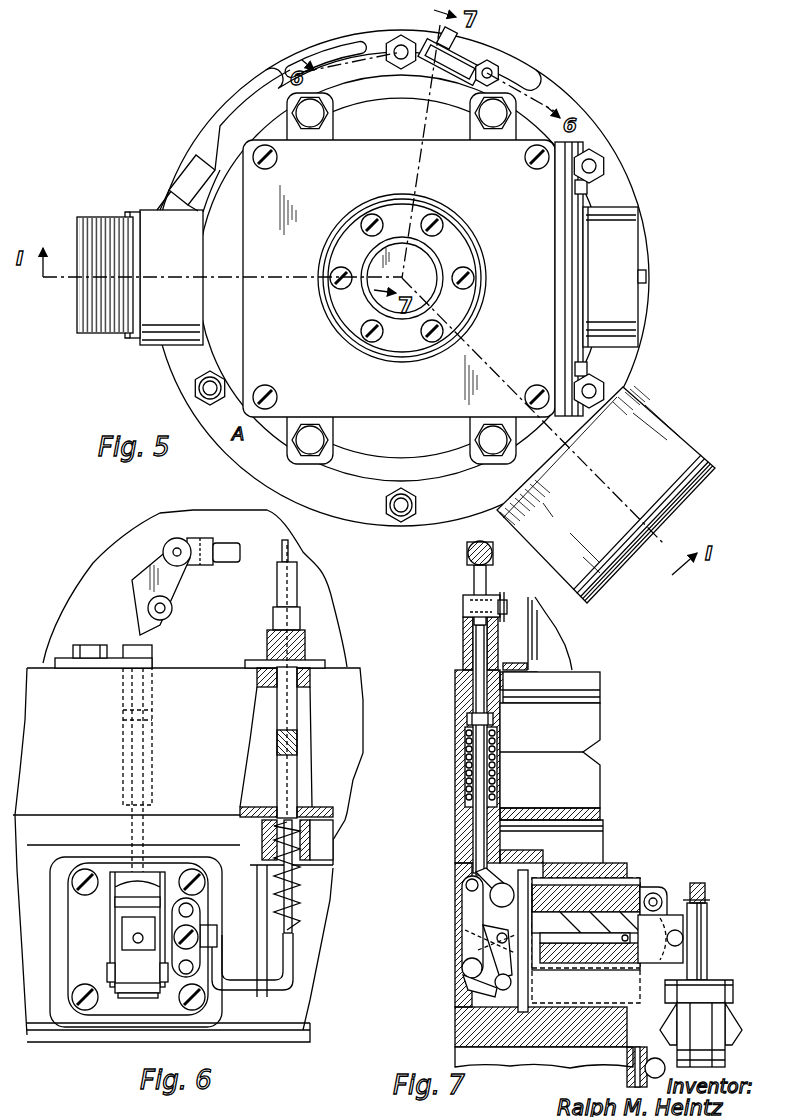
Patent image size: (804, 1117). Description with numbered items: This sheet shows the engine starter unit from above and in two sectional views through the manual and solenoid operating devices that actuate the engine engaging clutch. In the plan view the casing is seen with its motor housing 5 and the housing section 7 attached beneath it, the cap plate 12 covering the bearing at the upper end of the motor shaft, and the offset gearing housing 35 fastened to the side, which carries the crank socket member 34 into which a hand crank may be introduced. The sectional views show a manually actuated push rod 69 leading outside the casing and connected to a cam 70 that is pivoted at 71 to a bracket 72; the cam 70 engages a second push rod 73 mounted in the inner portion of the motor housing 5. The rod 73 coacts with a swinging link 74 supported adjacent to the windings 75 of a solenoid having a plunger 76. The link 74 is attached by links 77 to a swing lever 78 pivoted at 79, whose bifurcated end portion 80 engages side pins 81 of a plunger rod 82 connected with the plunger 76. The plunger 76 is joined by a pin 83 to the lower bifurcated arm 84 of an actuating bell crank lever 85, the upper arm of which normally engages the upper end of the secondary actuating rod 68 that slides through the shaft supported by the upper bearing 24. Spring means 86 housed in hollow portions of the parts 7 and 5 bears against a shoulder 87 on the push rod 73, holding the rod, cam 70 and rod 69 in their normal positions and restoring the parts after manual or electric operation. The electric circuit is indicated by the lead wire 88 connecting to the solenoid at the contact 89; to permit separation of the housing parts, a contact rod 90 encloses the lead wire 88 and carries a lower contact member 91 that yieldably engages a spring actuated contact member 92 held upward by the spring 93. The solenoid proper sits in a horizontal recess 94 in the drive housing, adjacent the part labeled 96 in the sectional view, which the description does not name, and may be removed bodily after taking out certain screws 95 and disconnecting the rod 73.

In FIG. 5, the motor housing 5 is at (404, 418).
In FIG. 6, the motor housing 5 is at (72, 602).
In FIG. 7, the motor housing 5 is at (556, 643).
In FIG. 6, the housing section 7 is at (344, 770).
In FIG. 7, the housing section 7 is at (455, 778).
In FIG. 5, the cap plate 12 is at (402, 278).
In FIG. 7, the upper bearing 24 is at (630, 1073).
In FIG. 5, the crank socket member 34 is at (644, 542).
In FIG. 5, the gearing housing 35 is at (703, 470).
In FIG. 7, the secondary actuating rod 68 is at (707, 966).
In FIG. 6, the push rod 69 is at (229, 549).
In FIG. 7, the push rod 69 is at (467, 553).
In FIG. 5, the cam 70 is at (405, 37).
In FIG. 6, the cam 70 is at (157, 573).
In FIG. 7, the cam 70 is at (474, 578).
In FIG. 5, the pivot 71 is at (456, 40).
In FIG. 6, the pivot 71 is at (172, 609).
In FIG. 7, the pivot 71 is at (506, 599).
In FIG. 5, the bracket 72 is at (440, 73).
In FIG. 6, the bracket 72 is at (158, 630).
In FIG. 6, the push rod 73 is at (132, 623).
In FIG. 7, the push rod 73 is at (465, 635).
In FIG. 6, the swinging link 74 is at (128, 872).
In FIG. 7, the swinging link 74 is at (489, 884).
In FIG. 7, the windings 75 is at (630, 883).
In FIG. 7, the plunger 76 is at (655, 893).
In FIG. 6, the links 77 is at (122, 922).
In FIG. 7, the links 77 is at (468, 925).
In FIG. 6, the swing lever 78 is at (133, 993).
In FIG. 7, the swing lever 78 is at (485, 985).
In FIG. 6, the pivot 79 is at (107, 967).
In FIG. 7, the pivot 79 is at (511, 981).
In FIG. 6, the bifurcated end portion 80 is at (115, 913).
In FIG. 7, the bifurcated end portion 80 is at (467, 920).
In FIG. 6, the side pins 81 is at (118, 940).
In FIG. 7, the side pins 81 is at (503, 938).
In FIG. 6, the plunger rod 82 is at (144, 944).
In FIG. 7, the plunger rod 82 is at (576, 944).
In FIG. 7, the pin 83 is at (684, 938).
In FIG. 7, the lower bifurcated arm 84 is at (706, 917).
In FIG. 7, the actuating bell crank lever 85 is at (703, 889).
In FIG. 7, the spring means 86 is at (497, 776).
In FIG. 7, the shoulder 87 is at (466, 720).
In FIG. 5, the lead wire 88 is at (244, 93).
In FIG. 6, the lead wire 88 is at (291, 553).
In FIG. 6, the contact 89 is at (209, 937).
In FIG. 6, the contact rod 90 is at (294, 705).
In FIG. 6, the lower contact member 91 is at (272, 807).
In FIG. 6, the spring actuated contact member 92 is at (307, 838).
In FIG. 6, the spring 93 is at (302, 884).
In FIG. 7, the recess 94 is at (601, 866).
In FIG. 6, the screws 95 is at (83, 870).
In FIG. 7, the plate 96 is at (458, 868).